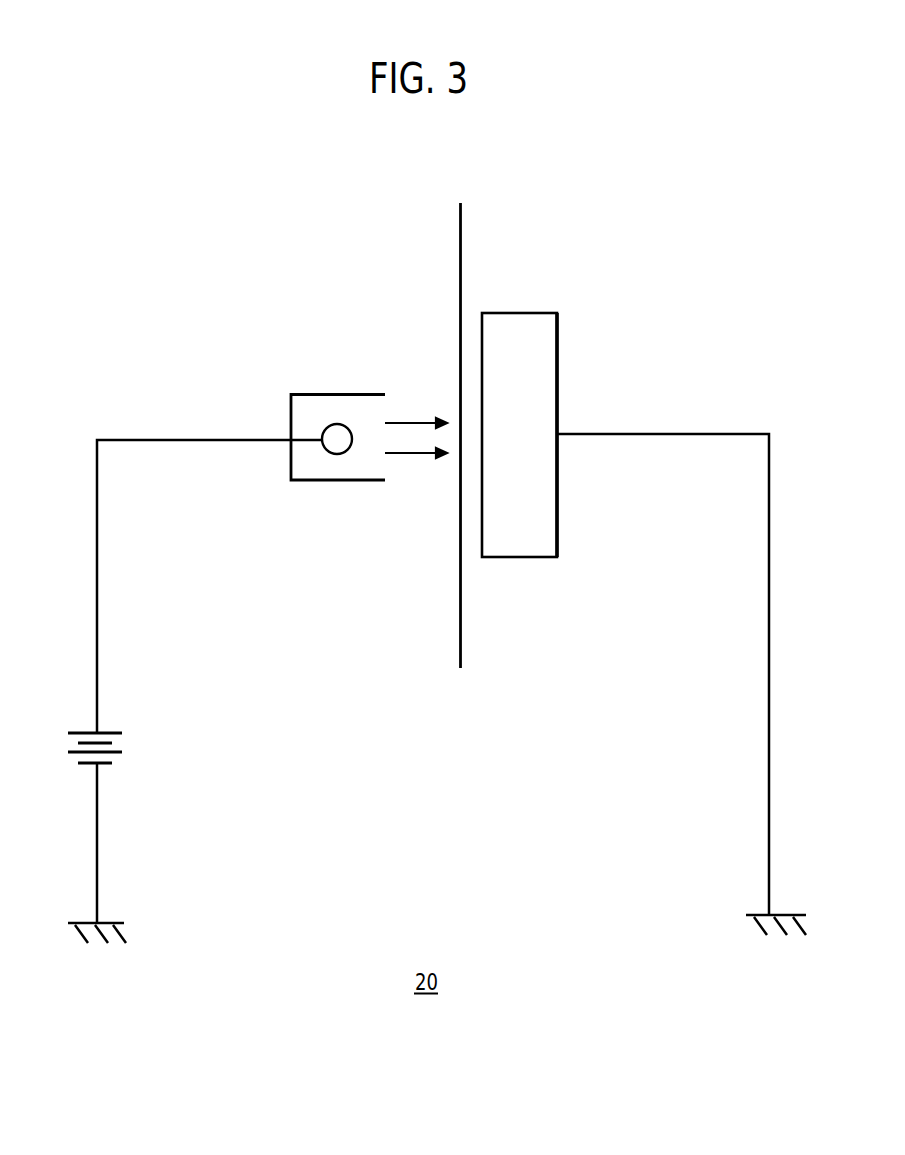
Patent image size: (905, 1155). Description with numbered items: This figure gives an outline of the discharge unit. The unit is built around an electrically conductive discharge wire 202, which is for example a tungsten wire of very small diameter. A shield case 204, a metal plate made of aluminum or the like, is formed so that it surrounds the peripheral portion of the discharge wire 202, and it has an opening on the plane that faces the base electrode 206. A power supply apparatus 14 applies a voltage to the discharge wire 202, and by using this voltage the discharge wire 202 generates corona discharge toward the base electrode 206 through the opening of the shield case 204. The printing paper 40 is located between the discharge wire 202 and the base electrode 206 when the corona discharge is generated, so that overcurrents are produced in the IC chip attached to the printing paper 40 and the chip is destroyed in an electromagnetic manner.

The power supply apparatus 14 is at (130, 747).
The printing paper 40 is at (461, 258).
The discharge wire 202 is at (327, 428).
The shield case 204 is at (342, 394).
The base electrode 206 is at (558, 337).